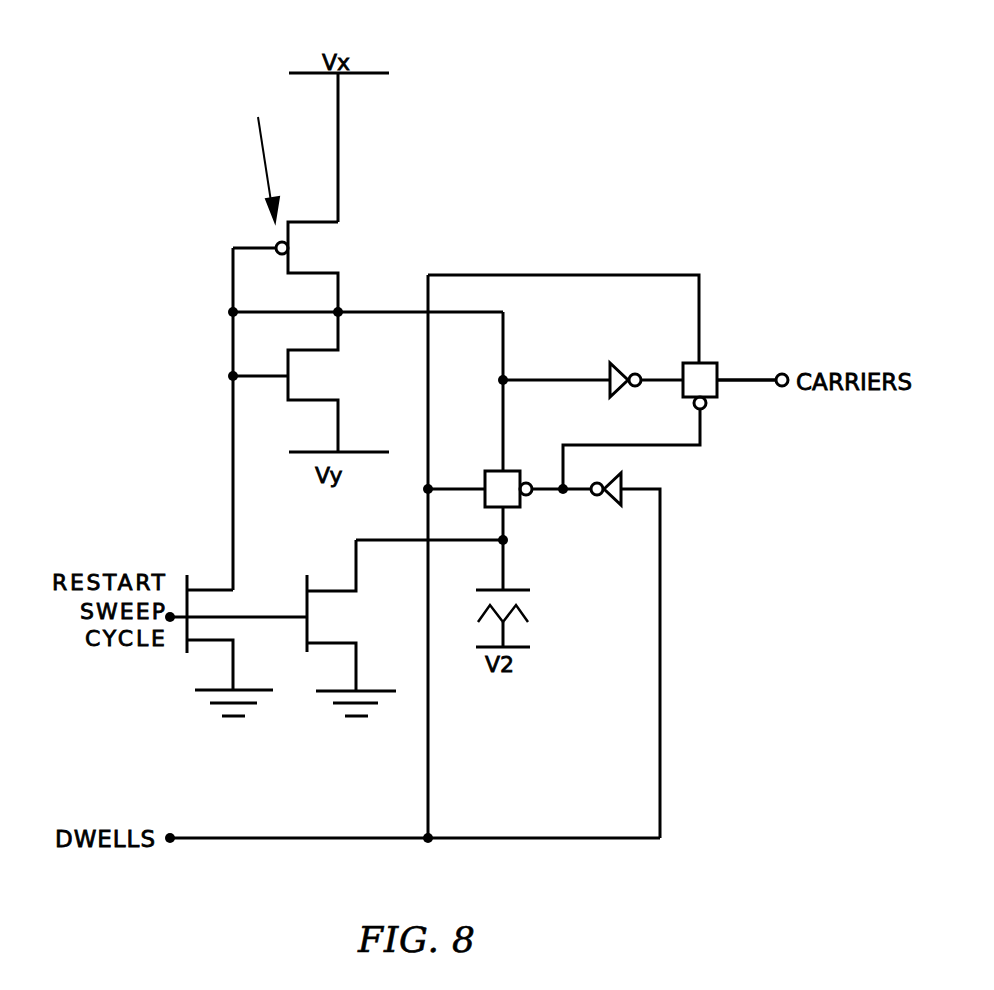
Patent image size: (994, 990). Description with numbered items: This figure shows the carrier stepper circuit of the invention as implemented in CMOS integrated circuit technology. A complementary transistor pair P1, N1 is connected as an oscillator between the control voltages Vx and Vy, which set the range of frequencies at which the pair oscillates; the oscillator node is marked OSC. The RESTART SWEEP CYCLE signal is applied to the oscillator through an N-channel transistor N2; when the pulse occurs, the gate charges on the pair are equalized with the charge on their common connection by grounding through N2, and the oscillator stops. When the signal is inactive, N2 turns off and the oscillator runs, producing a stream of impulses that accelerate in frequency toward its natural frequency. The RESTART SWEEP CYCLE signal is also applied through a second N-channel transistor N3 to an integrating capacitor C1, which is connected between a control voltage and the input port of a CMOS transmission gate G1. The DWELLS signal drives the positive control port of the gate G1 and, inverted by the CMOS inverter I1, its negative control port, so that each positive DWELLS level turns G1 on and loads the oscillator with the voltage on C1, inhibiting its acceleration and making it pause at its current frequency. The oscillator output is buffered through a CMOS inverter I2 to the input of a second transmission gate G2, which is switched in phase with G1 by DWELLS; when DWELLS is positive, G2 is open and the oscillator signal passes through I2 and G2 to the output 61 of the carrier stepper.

The P-channel transistor P1 is at (329, 249).
The N-channel transistor N1 is at (328, 378).
The N-channel transistor N2 is at (205, 644).
The N-channel transistor N3 is at (327, 619).
The CMOS transmission gate G1 is at (492, 469).
The CMOS transmission gate G2 is at (703, 362).
The CMOS inverter I1 is at (610, 506).
The CMOS inverter I2 is at (620, 365).
The integrating capacitor C1 is at (519, 590).
The output 61 is at (749, 383).
The oscillator node OSC is at (252, 153).